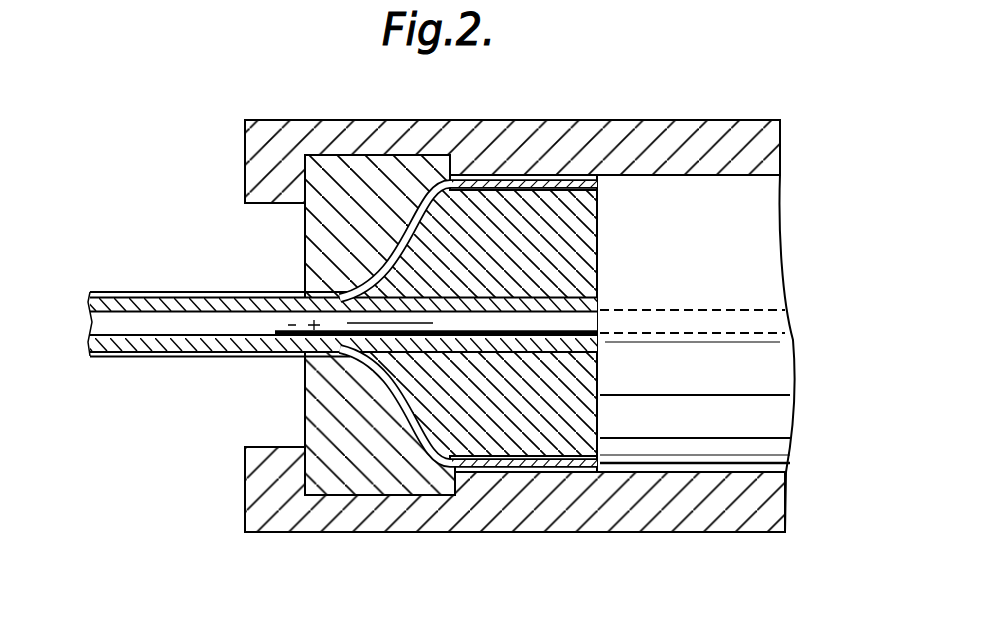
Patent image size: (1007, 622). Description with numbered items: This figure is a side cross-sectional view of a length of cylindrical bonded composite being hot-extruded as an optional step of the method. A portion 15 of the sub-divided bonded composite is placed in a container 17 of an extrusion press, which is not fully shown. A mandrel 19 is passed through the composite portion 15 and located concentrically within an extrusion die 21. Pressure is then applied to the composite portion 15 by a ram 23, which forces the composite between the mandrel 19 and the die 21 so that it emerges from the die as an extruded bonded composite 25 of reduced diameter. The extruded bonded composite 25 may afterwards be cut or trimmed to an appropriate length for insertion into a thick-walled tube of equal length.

The portion of the sub-divided bonded composite 15 is at (539, 177).
The container 17 is at (724, 145).
The mandrel 19 is at (312, 330).
The extrusion die 21 is at (355, 168).
The ram 23 is at (660, 445).
The extruded bonded composite 25 is at (157, 364).